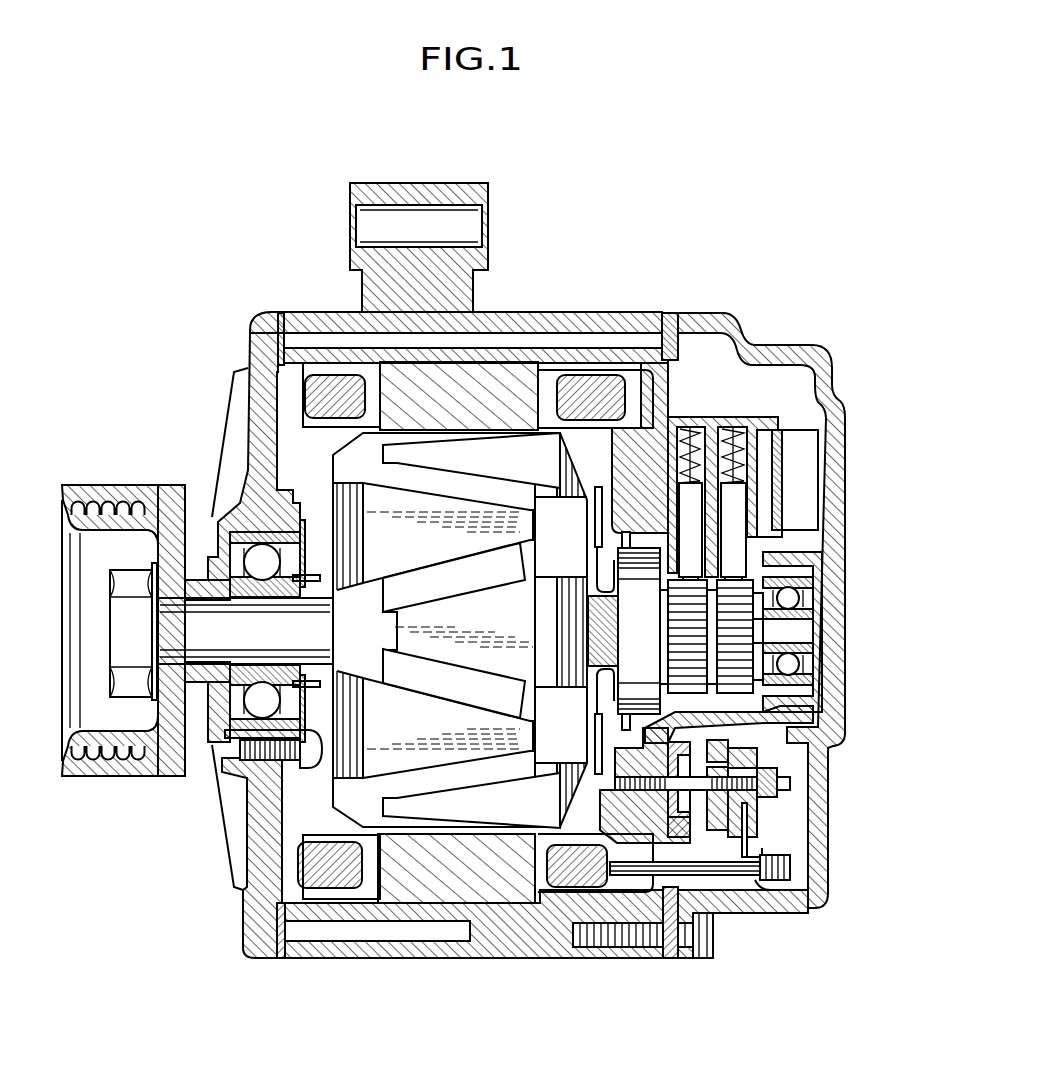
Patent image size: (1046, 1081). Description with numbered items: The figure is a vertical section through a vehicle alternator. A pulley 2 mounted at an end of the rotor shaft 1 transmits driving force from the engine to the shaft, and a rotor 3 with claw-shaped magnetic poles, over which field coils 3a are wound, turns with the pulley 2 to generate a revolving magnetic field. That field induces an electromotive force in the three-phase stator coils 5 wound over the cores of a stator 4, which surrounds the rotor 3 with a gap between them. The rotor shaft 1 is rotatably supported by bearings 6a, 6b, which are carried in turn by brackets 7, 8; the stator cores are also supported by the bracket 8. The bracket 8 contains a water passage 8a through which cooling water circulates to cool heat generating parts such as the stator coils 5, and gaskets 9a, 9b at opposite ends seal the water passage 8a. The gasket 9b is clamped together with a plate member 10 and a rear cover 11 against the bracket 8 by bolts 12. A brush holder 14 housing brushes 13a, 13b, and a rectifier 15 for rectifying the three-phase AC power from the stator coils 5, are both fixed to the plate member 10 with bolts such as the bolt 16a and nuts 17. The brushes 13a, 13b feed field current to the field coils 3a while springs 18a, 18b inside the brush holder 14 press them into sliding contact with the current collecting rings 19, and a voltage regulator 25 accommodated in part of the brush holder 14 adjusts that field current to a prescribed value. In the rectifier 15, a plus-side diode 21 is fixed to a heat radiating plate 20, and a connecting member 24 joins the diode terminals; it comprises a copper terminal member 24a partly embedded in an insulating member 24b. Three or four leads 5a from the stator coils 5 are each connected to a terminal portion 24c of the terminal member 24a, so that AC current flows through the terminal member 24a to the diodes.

The rotor shaft 1 is at (198, 645).
The pulley 2 is at (150, 493).
The rotor 3 is at (502, 457).
The field coils 3a is at (526, 577).
The stator 4 is at (528, 383).
The stator coils 5 is at (583, 380).
The leads 5a is at (762, 888).
The bearing 6a is at (218, 507).
The bearing 6b is at (813, 565).
The bracket 7 is at (248, 340).
The bracket 8 is at (500, 958).
The water passage 8a is at (327, 346).
The gasket 9a is at (280, 313).
The gasket 9b is at (667, 313).
The plate member 10 is at (667, 958).
The rear cover 11 is at (843, 597).
The bolts 12 is at (685, 958).
The brush 13a is at (690, 497).
The brush 13b is at (733, 515).
The brush holder 14 is at (765, 428).
The rectifier 15 is at (708, 832).
The bolt 16a is at (777, 768).
The nuts 17 is at (790, 784).
The spring 18a is at (690, 418).
The spring 18b is at (740, 420).
The current collecting rings 19 is at (735, 640).
The heat radiating plate 20 is at (700, 823).
The plus-side diode 21 is at (690, 823).
The connecting member 24 is at (752, 740).
The terminal member 24a is at (752, 847).
The insulating member 24b is at (757, 807).
The terminal portion 24c is at (785, 890).
The voltage regulator 25 is at (752, 447).